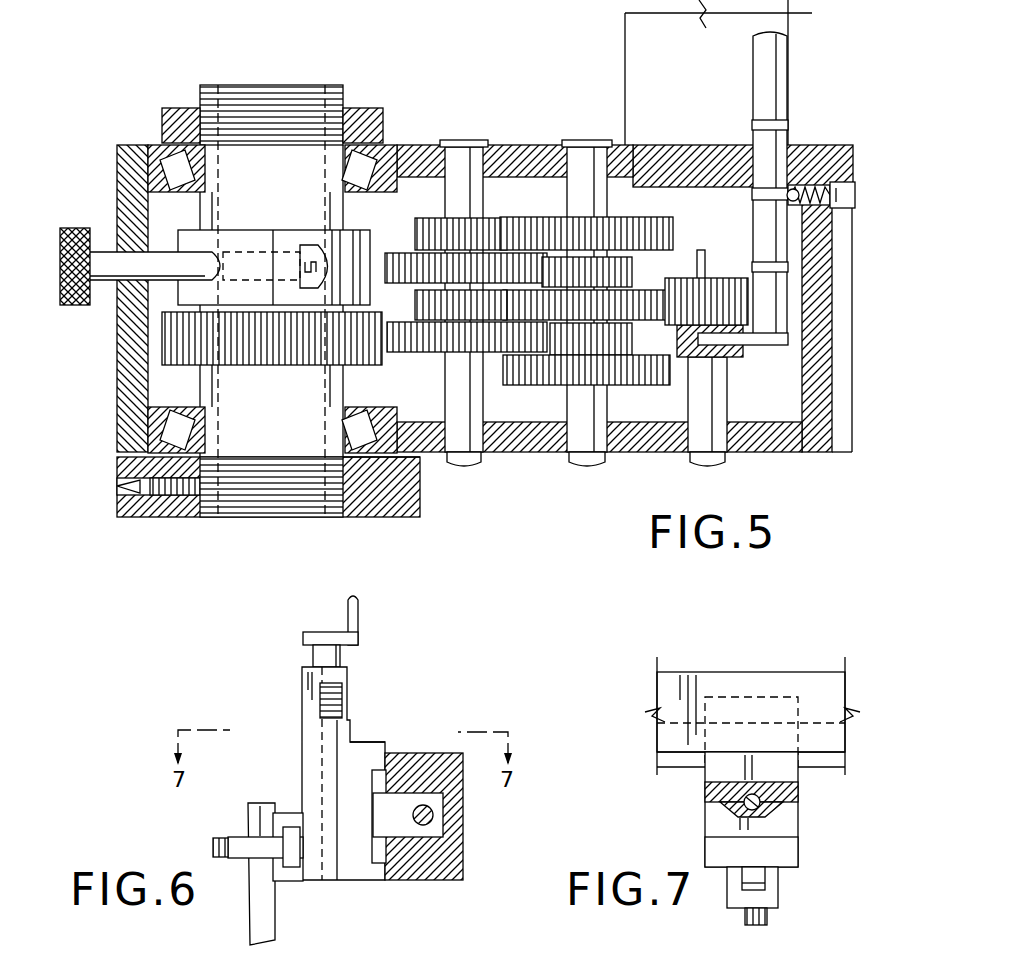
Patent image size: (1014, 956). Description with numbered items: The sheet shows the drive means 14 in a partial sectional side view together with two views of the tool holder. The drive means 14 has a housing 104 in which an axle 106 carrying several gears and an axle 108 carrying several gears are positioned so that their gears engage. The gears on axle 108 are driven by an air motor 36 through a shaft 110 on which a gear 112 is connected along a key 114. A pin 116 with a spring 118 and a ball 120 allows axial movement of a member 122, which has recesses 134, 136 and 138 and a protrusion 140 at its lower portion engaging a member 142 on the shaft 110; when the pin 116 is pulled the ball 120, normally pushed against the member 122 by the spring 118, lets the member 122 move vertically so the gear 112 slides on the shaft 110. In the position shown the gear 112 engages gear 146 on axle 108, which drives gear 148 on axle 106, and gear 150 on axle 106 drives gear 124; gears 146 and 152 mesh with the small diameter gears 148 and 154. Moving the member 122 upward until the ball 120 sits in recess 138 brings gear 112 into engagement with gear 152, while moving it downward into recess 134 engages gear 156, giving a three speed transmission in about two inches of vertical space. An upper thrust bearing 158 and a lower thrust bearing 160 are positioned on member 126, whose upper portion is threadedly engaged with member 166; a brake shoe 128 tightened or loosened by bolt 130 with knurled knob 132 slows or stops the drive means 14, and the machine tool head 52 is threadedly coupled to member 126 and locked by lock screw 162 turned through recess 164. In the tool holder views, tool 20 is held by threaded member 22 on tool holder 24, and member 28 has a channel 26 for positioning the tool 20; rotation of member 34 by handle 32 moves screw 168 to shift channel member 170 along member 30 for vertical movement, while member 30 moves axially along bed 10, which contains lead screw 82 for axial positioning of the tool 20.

In FIG. 6, the bed 10 is at (466, 860).
In FIG. 7, the bed 10 is at (724, 668).
In FIG. 5, the drive means 14 is at (806, 456).
In FIG. 6, the tool 20 is at (262, 912).
In FIG. 7, the tool 20 is at (765, 878).
In FIG. 6, the threaded member 22 is at (213, 848).
In FIG. 7, the threaded member 22 is at (748, 922).
In FIG. 6, the tool holder 24 is at (240, 843).
In FIG. 7, the tool holder 24 is at (772, 895).
In FIG. 6, the channel 26 is at (292, 838).
In FIG. 6, the member 28 is at (292, 877).
In FIG. 7, the member 28 is at (770, 852).
In FIG. 6, the member 30 is at (312, 722).
In FIG. 7, the member 30 is at (712, 821).
In FIG. 6, the handle 32 is at (360, 618).
In FIG. 6, the member 34 is at (306, 636).
In FIG. 5, the air motor 36 is at (655, 50).
In FIG. 5, the machine tool head 52 is at (400, 515).
In FIG. 6, the lead screw 82 is at (434, 815).
In FIG. 7, the lead screw 82 is at (822, 705).
In FIG. 5, the housing 104 is at (497, 160).
In FIG. 5, the axle 106 is at (462, 170).
In FIG. 5, the axle 108 is at (587, 170).
In FIG. 5, the shaft 110 is at (712, 435).
In FIG. 5, the gear 112 is at (725, 305).
In FIG. 5, the key 114 is at (698, 405).
In FIG. 5, the pin 116 is at (850, 188).
In FIG. 5, the spring 118 is at (796, 190).
In FIG. 5, the ball 120 is at (808, 205).
In FIG. 5, the member 122 is at (770, 80).
In FIG. 5, the gear 124 is at (187, 350).
In FIG. 5, the member 126 is at (255, 522).
In FIG. 5, the brake shoe 128 is at (190, 300).
In FIG. 5, the bolt 130 is at (112, 258).
In FIG. 5, the knurled knob 132 is at (72, 228).
In FIG. 5, the recess 134 is at (755, 126).
In FIG. 5, the recess 136 is at (758, 195).
In FIG. 5, the recess 138 is at (790, 266).
In FIG. 5, the protrusion 140 is at (760, 345).
In FIG. 5, the member 142 is at (742, 352).
In FIG. 5, the gear 146 is at (570, 305).
In FIG. 5, the gear 148 is at (442, 356).
In FIG. 5, the gear 150 is at (488, 336).
In FIG. 5, the gear 152 is at (530, 235).
In FIG. 5, the gear 154 is at (440, 232).
In FIG. 5, the gear 156 is at (588, 372).
In FIG. 5, the thrust bearing 158 is at (178, 170).
In FIG. 5, the thrust bearing 160 is at (175, 425).
In FIG. 5, the lock screw 162 is at (160, 520).
In FIG. 5, the recess 164 is at (117, 487).
In FIG. 5, the member 166 is at (183, 116).
In FIG. 6, the screw 168 is at (345, 700).
In FIG. 7, the screw 168 is at (770, 792).
In FIG. 6, the channel member 170 is at (348, 760).
In FIG. 7, the channel member 170 is at (712, 790).